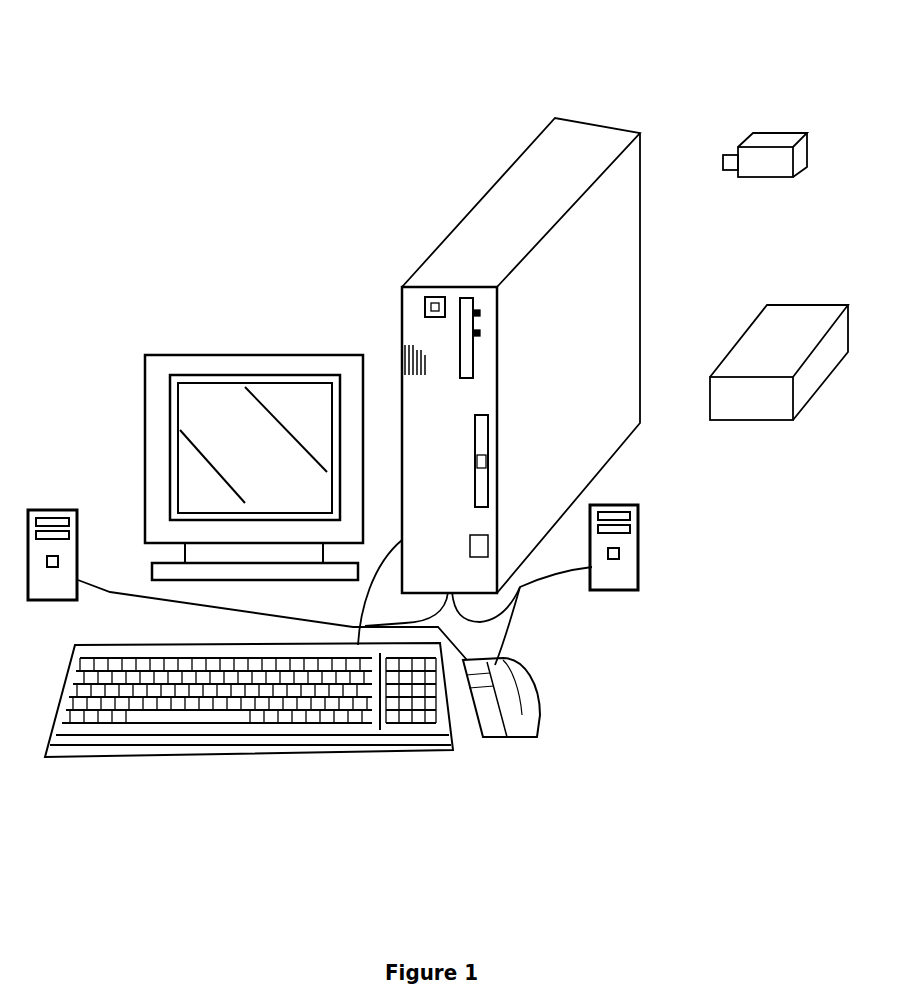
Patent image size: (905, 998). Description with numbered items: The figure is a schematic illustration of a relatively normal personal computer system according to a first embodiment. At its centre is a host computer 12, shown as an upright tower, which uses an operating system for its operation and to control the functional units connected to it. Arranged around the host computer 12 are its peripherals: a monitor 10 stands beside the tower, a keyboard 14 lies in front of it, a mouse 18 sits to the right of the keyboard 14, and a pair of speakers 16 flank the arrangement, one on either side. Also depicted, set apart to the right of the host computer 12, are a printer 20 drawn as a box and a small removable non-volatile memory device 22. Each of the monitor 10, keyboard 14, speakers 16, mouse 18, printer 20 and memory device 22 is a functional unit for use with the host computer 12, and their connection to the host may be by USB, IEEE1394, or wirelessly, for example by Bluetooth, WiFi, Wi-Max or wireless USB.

The monitor 10 is at (237, 323).
The host computer 12 is at (653, 263).
The keyboard 14 is at (393, 713).
The pair of speakers 16 is at (45, 482).
The mouse 18 is at (533, 725).
The printer 20 is at (765, 435).
The removable non-volatile memory device 22 is at (723, 117).